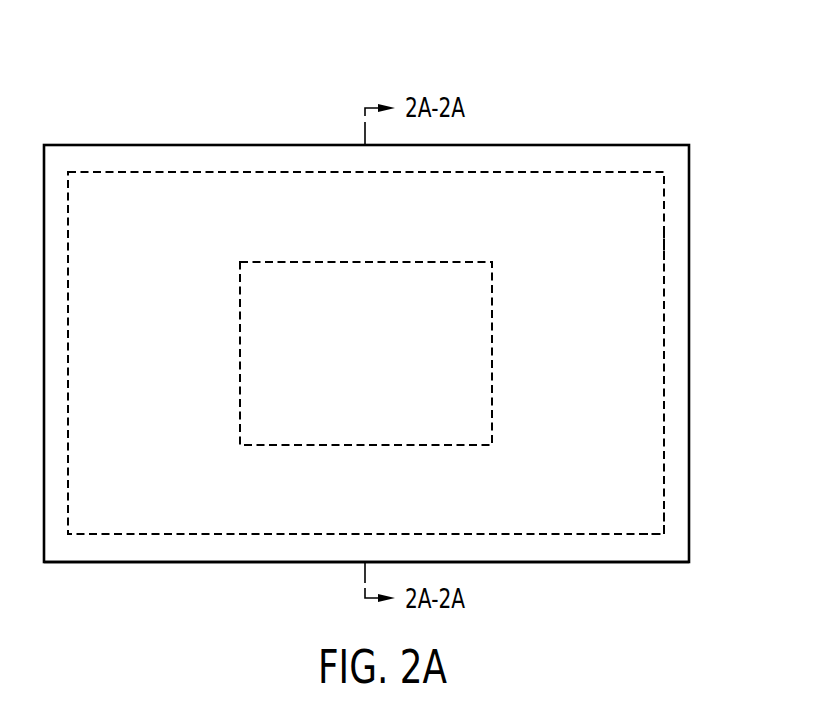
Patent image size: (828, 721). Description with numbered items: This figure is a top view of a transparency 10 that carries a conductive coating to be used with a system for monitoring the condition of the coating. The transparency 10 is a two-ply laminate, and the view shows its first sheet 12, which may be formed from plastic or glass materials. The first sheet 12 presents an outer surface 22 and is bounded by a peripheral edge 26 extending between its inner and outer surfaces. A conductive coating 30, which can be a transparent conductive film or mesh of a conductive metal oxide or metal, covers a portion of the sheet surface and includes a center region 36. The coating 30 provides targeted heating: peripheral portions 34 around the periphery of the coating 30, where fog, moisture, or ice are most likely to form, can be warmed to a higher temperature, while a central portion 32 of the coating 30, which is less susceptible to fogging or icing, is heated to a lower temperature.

The transparency 10 is at (517, 85).
The first sheet 12 is at (646, 145).
The outer surface 22 is at (633, 257).
The peripheral edge 26 is at (689, 418).
The conductive coating 30 is at (663, 298).
The central portion 32 is at (493, 302).
The peripheral portions 34 is at (647, 492).
The center region 36 is at (367, 352).